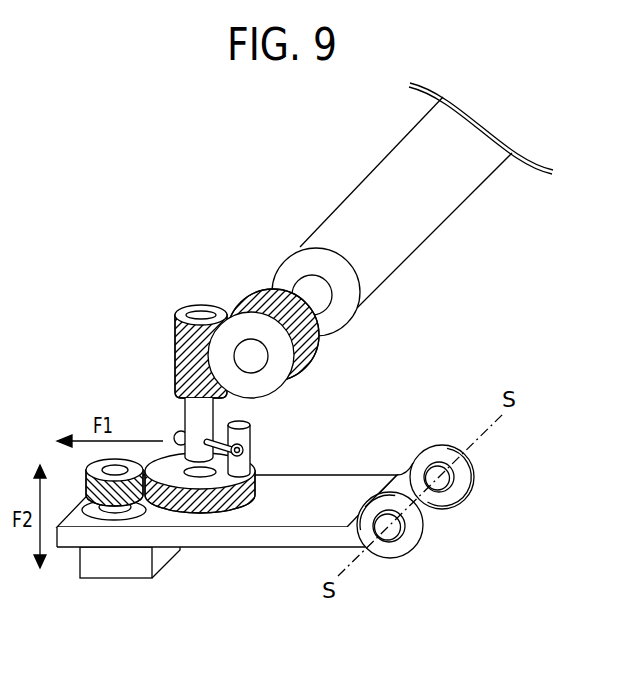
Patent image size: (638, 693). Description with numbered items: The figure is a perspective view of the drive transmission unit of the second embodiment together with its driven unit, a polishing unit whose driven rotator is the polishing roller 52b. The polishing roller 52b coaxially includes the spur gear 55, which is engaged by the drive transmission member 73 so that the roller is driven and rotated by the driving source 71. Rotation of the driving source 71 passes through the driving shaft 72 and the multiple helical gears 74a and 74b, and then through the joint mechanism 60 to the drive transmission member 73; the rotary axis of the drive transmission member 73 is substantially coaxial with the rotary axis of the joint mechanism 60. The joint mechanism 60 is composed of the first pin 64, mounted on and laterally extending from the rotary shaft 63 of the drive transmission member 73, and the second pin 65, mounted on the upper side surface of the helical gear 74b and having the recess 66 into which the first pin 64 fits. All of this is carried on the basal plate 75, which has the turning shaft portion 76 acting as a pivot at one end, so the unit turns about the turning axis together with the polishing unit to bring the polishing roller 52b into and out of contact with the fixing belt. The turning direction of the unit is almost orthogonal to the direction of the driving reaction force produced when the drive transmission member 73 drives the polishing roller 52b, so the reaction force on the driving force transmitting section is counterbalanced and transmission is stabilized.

The polishing roller 52b is at (380, 281).
The spur gear 55 is at (298, 356).
The drive transmission member 73 is at (180, 348).
The rotary shaft 63 is at (183, 418).
The second pin 65 is at (252, 434).
The first pin 64 is at (245, 450).
The joint mechanism 60 is at (317, 407).
The recess 66 is at (254, 473).
The helical gear 74a is at (133, 495).
The helical gear 74b is at (210, 503).
The basal plate 75 is at (286, 542).
The turning shaft portion 76 is at (410, 540).
The driving shaft 72 is at (110, 514).
The driving source 71 is at (125, 582).